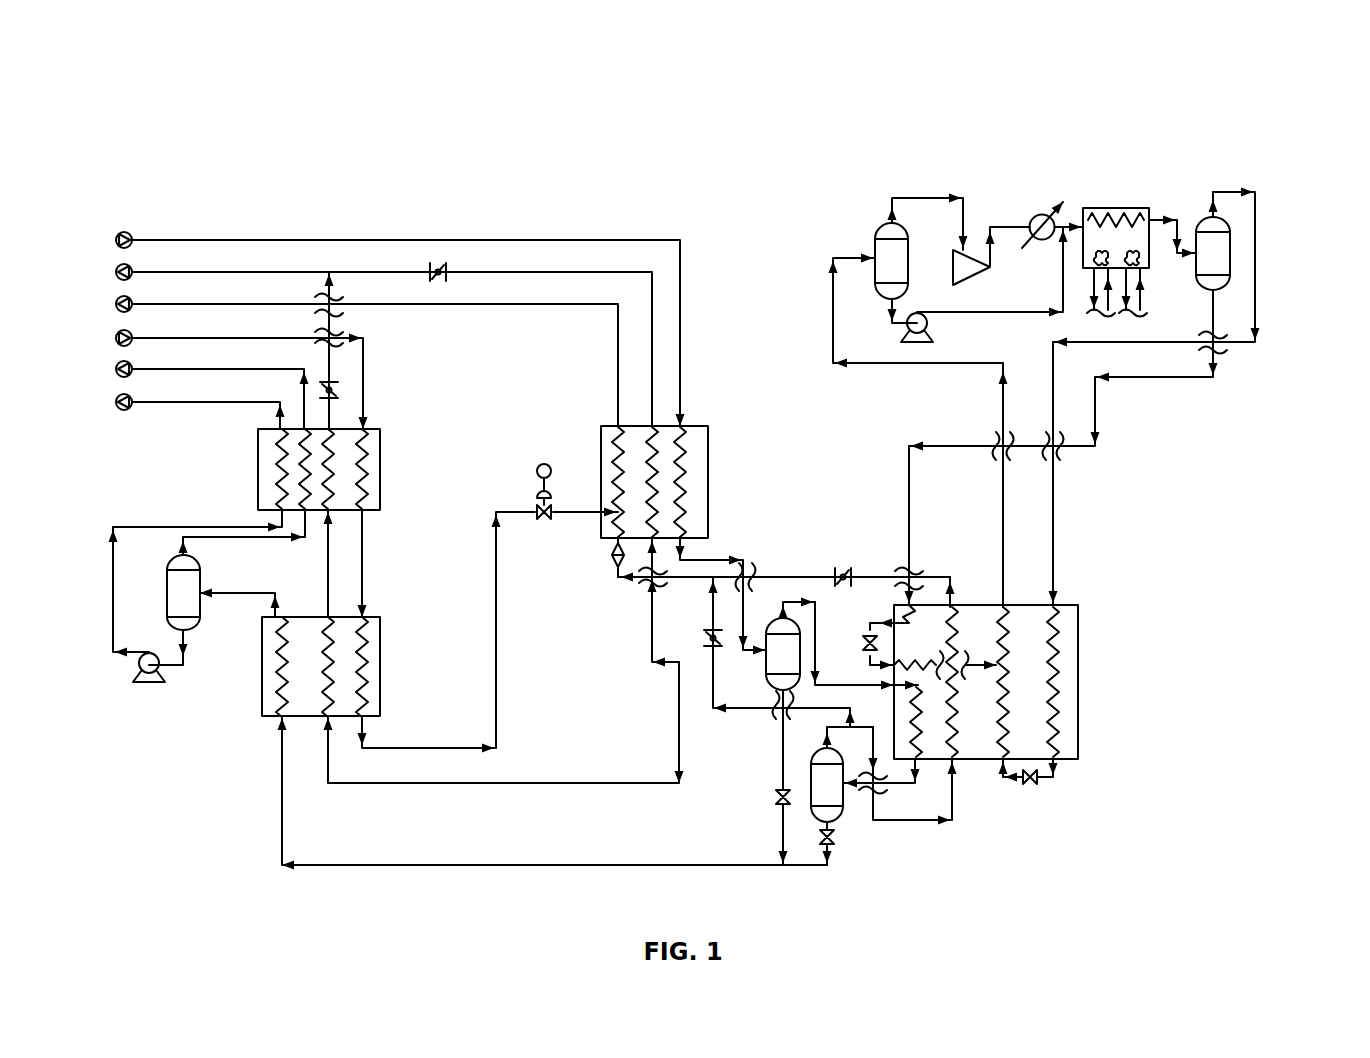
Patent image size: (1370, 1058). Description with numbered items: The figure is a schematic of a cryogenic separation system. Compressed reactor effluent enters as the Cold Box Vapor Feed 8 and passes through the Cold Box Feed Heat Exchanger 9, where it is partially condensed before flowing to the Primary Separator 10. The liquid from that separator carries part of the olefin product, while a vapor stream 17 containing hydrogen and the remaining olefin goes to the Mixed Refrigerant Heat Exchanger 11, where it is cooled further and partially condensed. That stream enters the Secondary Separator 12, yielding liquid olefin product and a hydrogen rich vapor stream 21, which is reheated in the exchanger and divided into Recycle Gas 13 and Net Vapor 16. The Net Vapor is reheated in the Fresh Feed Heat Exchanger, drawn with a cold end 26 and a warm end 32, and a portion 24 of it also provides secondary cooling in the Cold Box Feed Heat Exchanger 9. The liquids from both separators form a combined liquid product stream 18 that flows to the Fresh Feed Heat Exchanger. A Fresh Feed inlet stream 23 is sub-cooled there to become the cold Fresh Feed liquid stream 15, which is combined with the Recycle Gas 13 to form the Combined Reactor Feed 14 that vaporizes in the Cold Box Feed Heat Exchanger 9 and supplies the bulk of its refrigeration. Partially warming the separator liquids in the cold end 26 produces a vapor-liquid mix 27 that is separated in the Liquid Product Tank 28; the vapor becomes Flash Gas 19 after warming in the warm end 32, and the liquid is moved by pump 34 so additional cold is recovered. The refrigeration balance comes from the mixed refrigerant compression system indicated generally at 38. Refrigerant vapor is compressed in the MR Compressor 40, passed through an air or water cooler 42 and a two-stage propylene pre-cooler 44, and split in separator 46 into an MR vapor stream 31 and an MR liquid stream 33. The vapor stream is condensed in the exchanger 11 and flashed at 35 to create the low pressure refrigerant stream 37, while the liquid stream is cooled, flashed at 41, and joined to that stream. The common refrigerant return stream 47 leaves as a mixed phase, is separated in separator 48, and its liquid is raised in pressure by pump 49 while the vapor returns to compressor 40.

The Cold Box Vapor Feed 8 is at (283, 240).
The Fresh Feed inlet stream 23 is at (208, 338).
The Flash Gas 19 is at (302, 400).
The warm end of Fresh Feed Heat Exchanger 32 is at (258, 472).
The Liquid Product Tank 28 is at (191, 576).
The vapor-liquid mix 27 is at (275, 593).
The cold end of Fresh Feed Heat Exchanger 26 is at (262, 696).
The pump 34 is at (150, 688).
The Cold Box Feed Heat Exchanger 9 is at (601, 441).
The Combined Reactor Feed 14 is at (617, 471).
The Recycle Gas 13 is at (615, 574).
The portion of Net Vapor Product 24 is at (650, 633).
The cold Fresh Feed liquid stream 15 is at (498, 705).
The Net Vapor 16 is at (678, 690).
The combined liquid product stream 18 is at (352, 868).
The Primary Separator 10 is at (777, 665).
The Secondary Separator 12 is at (840, 798).
The hydrogen rich vapor stream 21 is at (925, 826).
The vapor stream 17 is at (817, 627).
The flash valve 41 is at (870, 624).
The Mixed Refrigerant Heat Exchanger 11 is at (1078, 661).
The low pressure refrigerant stream 37 is at (1008, 686).
The flash valve 35 is at (1035, 789).
The common refrigerant return stream 47 is at (1003, 394).
The separator 48 is at (880, 246).
The pump 49 is at (928, 326).
The MR Compressor 40 is at (967, 273).
The air or water cooler 42 is at (1038, 215).
The C3 pre-cooler 44 is at (1120, 208).
The MR vapor stream 31 is at (1228, 192).
The separator 46 is at (1220, 256).
The MR liquid stream 33 is at (1220, 358).
The Mixed Refrigerant compression system 38 is at (1255, 75).